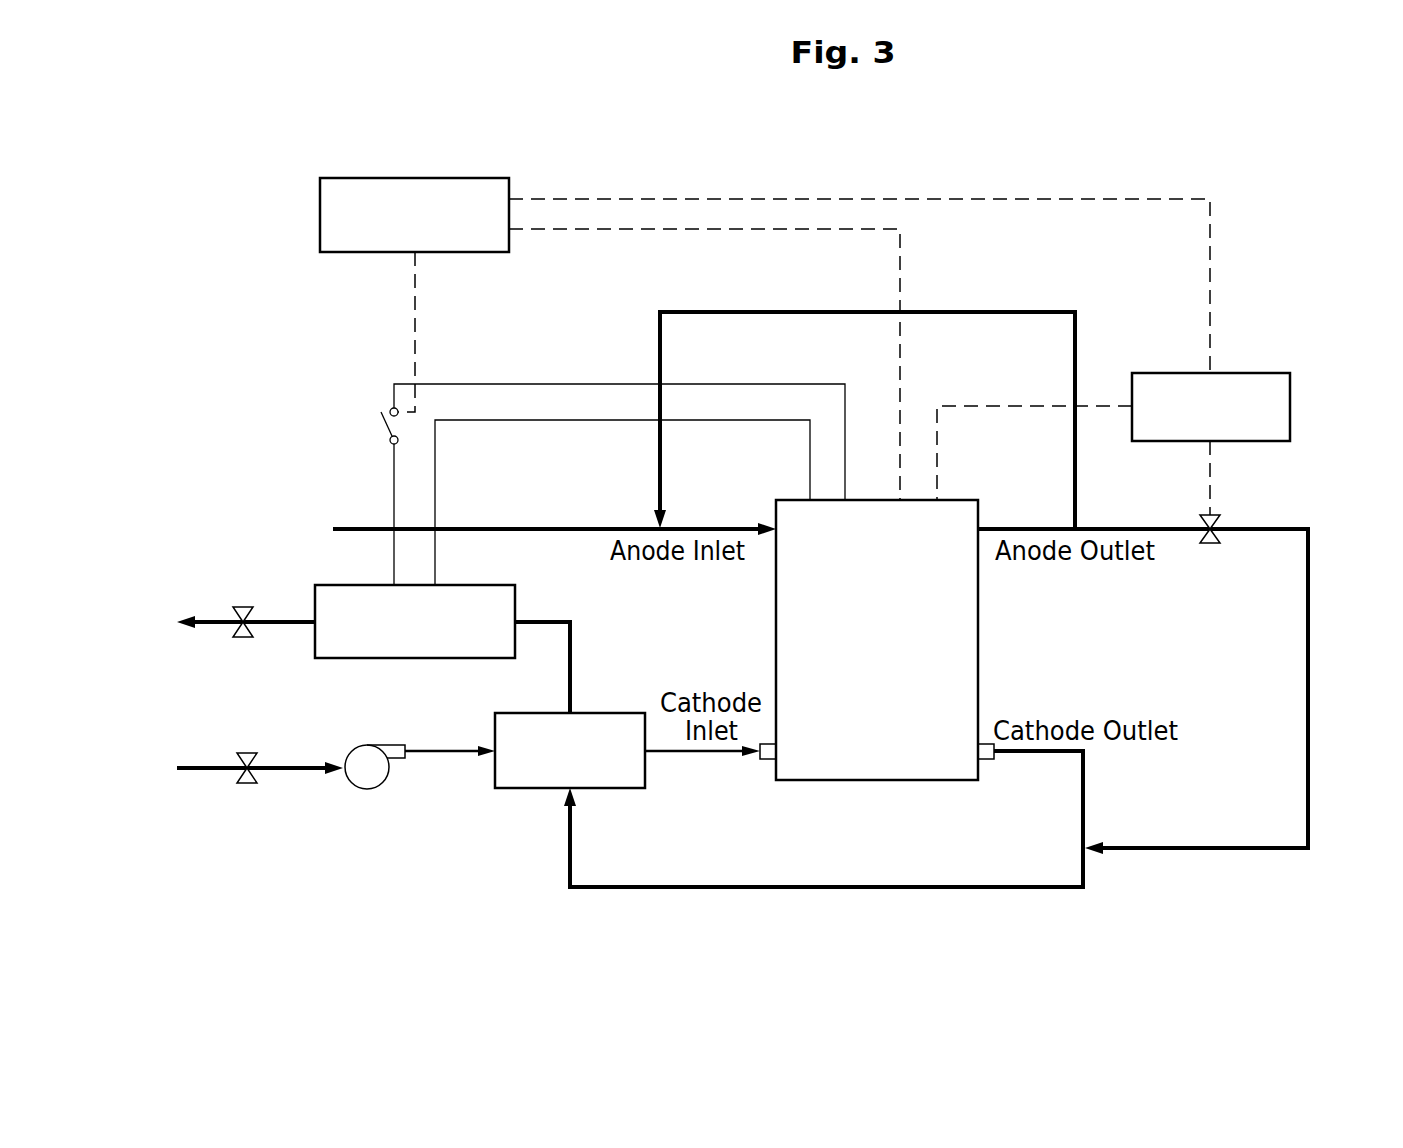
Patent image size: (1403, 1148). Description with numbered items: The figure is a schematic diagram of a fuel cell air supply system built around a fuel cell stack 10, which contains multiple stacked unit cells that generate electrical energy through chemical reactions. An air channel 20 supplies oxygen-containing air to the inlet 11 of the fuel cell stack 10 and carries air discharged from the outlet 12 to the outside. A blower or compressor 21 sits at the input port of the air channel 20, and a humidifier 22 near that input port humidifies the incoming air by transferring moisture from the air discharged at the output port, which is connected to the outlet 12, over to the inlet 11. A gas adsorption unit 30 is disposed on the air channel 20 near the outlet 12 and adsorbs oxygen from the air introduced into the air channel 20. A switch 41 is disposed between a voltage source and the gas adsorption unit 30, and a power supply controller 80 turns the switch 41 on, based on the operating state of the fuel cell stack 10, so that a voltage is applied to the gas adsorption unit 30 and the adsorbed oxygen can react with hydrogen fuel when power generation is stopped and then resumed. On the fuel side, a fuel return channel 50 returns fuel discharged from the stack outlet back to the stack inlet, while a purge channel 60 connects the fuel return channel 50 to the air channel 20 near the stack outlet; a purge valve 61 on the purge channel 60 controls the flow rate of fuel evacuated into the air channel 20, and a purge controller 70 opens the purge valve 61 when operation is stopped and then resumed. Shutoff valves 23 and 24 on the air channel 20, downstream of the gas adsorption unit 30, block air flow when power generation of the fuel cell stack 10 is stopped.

The fuel cell stack 10 is at (872, 780).
The inlet 11 is at (766, 760).
The outlet 12 is at (988, 760).
The air channel 20 is at (818, 887).
The blower or compressor 21 is at (366, 789).
The humidifier 22 is at (527, 788).
The shutoff valve 23 is at (240, 606).
The shutoff valve 24 is at (246, 784).
The gas adsorption unit 30 is at (358, 658).
The switch 41 is at (381, 425).
The fuel return channel 50 is at (986, 312).
The purge channel 60 is at (1310, 660).
The purge valve 61 is at (1220, 522).
The purge controller 70 is at (1265, 373).
The power supply controller 80 is at (400, 178).